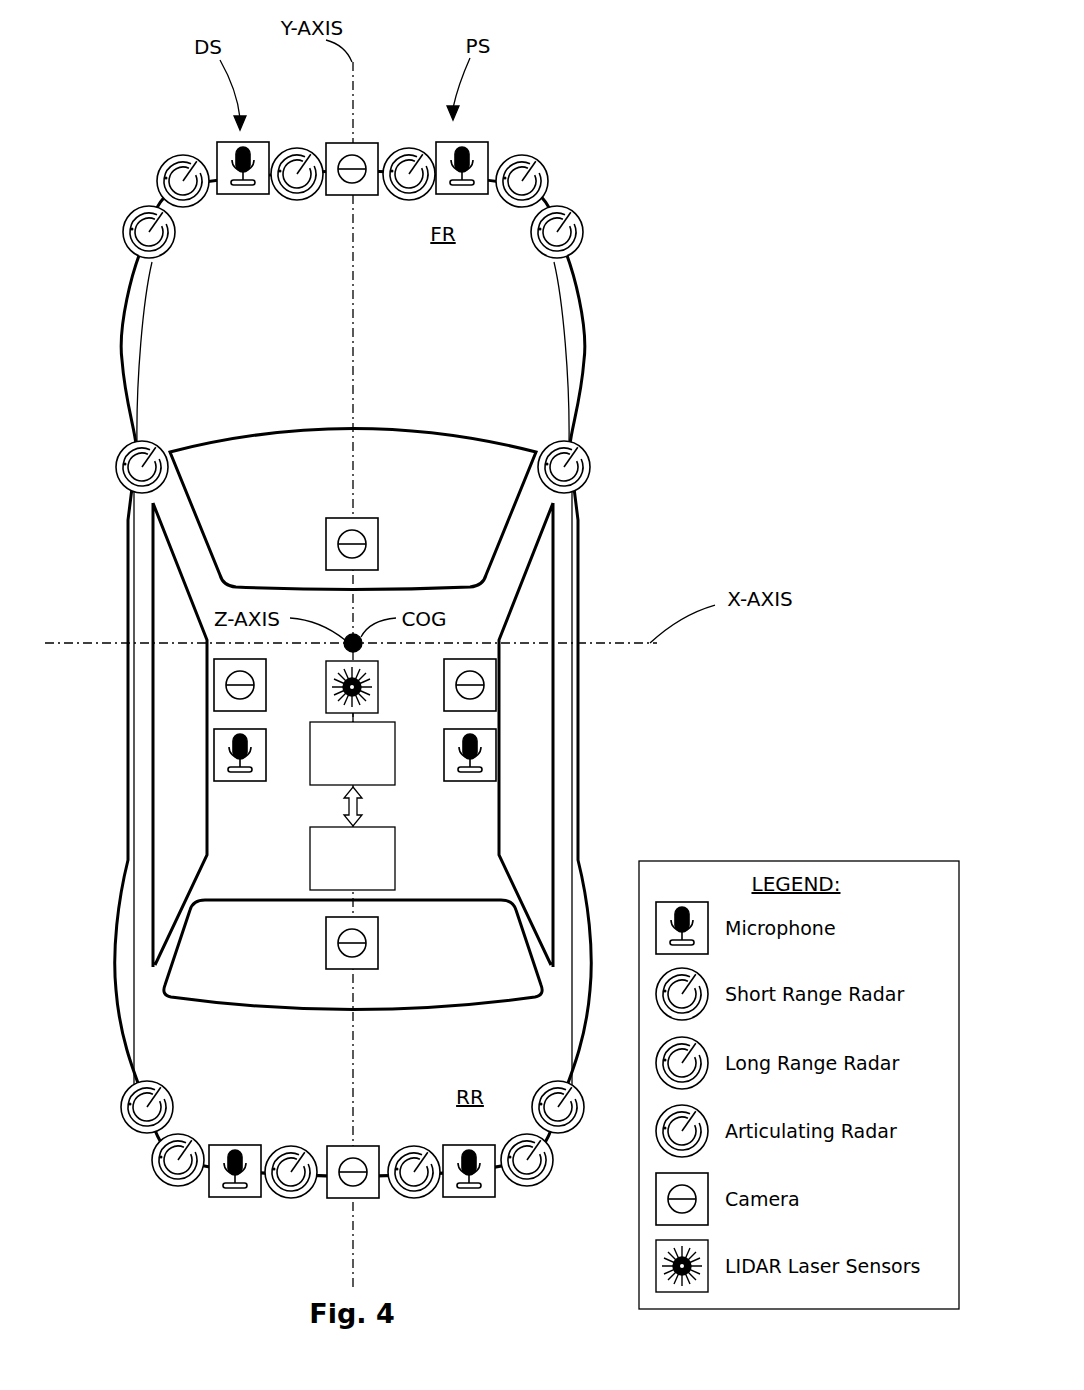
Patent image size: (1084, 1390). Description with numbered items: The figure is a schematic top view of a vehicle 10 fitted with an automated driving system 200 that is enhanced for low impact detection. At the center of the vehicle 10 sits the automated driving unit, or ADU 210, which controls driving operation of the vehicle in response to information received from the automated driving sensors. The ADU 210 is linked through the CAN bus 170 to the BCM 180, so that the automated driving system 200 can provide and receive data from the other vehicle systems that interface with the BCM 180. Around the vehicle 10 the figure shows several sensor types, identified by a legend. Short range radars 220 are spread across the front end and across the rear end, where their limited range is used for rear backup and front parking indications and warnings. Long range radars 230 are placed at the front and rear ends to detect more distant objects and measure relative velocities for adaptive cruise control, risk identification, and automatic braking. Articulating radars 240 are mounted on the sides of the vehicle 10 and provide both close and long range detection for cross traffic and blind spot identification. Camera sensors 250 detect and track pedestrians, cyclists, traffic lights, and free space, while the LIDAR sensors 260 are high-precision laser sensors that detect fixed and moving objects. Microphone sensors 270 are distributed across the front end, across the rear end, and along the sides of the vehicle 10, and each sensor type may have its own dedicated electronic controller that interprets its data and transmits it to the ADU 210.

The vehicle 10 is at (110, 150).
The CAN bus 170 is at (361, 810).
The BCM 180 is at (380, 840).
The automated driving system 200 is at (203, 125).
The automated driving unit (ADU) 210 is at (372, 742).
The short range radar sensors 220 is at (192, 208).
The long range radar sensors 230 is at (152, 260).
The articulating radar sensors 240 is at (120, 450).
The camera sensors 250 is at (368, 140).
The LIDAR sensors 260 is at (365, 678).
The microphone sensors 270 is at (263, 142).